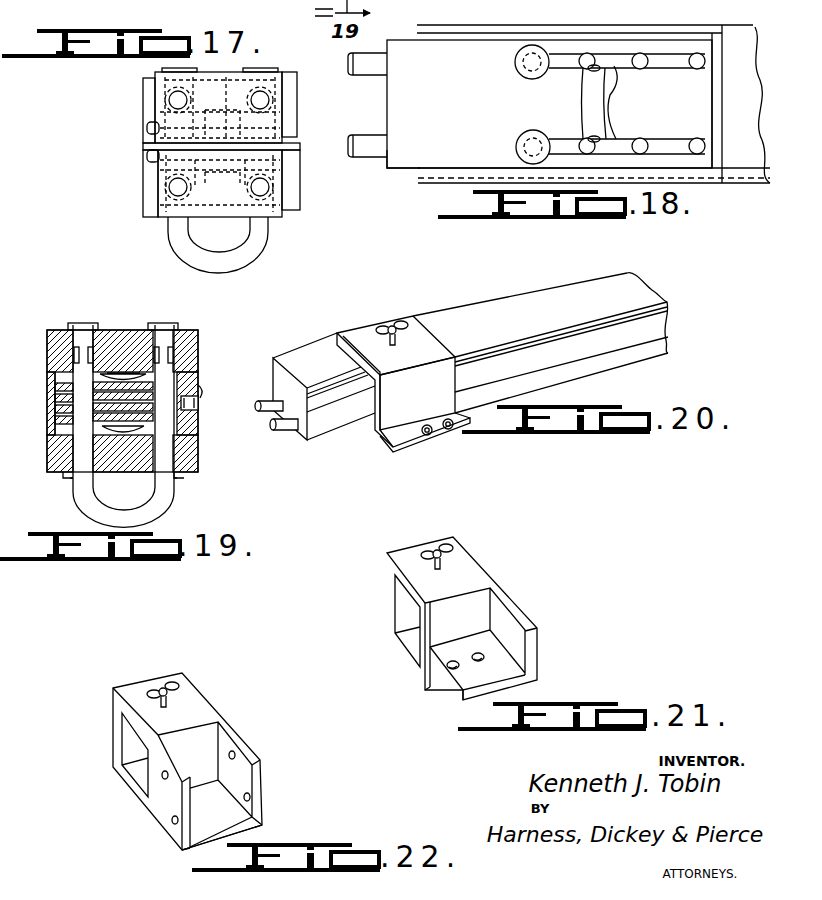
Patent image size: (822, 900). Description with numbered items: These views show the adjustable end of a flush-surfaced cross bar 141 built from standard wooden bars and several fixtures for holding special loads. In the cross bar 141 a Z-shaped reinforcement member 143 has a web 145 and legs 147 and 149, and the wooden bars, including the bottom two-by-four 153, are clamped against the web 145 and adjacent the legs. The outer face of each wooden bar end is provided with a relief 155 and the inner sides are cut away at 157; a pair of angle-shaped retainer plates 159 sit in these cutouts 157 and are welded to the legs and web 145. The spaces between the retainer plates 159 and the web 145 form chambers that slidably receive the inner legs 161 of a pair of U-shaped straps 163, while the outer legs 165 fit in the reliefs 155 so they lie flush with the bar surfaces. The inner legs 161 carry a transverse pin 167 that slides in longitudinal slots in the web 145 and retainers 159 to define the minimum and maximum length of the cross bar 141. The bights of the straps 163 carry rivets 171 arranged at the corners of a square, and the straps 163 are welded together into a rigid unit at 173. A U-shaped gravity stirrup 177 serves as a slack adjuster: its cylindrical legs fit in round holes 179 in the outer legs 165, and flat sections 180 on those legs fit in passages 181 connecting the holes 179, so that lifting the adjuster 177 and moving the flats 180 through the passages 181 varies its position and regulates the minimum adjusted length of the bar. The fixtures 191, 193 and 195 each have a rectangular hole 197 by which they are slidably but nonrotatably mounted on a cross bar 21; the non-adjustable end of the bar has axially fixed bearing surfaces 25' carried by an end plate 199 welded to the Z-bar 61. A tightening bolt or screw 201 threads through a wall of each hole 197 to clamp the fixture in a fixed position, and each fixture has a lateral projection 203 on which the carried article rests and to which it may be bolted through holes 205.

In FIG. 20, the square bar 21 is at (575, 286).
In FIG. 19, the bearing surfaces 25' is at (230, 417).
In FIG. 20, the Z-bar 61 is at (340, 408).
In FIG. 17, the cross bar 141 is at (138, 182).
In FIG. 18, the cross bar 141 is at (726, 24).
In FIG. 19, the Z-shaped reinforcement member 143 is at (52, 352).
In FIG. 19, the web 145 is at (62, 412).
In FIG. 17, the leg 147 is at (143, 102).
In FIG. 19, the leg 147 is at (62, 388).
In FIG. 17, the leg 149 is at (300, 171).
In FIG. 19, the leg 149 is at (200, 437).
In FIG. 19, the bottom 2 x 4 153 is at (85, 332).
In FIG. 18, the relief 155 is at (724, 125).
In FIG. 19, the relief 155 is at (185, 332).
In FIG. 19, the cutout 157 is at (195, 345).
In FIG. 17, the retainer plate 159 is at (150, 128).
In FIG. 19, the retainer plate 159 is at (58, 436).
In FIG. 19, the inner leg 161 is at (200, 403).
In FIG. 18, the U-shaped strap 163 is at (405, 163).
In FIG. 18, the outer leg 165 is at (692, 118).
In FIG. 19, the outer leg 165 is at (96, 345).
In FIG. 17, the transverse pin 167 is at (238, 66).
In FIG. 19, the transverse pin 167 is at (125, 385).
In FIG. 17, the rivet 171 is at (169, 98).
In FIG. 18, the rivet 171 is at (360, 137).
In FIG. 19, the weld 173 is at (68, 478).
In FIG. 17, the U-shaped gravity stirrup 177 is at (248, 245).
In FIG. 18, the U-shaped gravity stirrup 177 is at (530, 80).
In FIG. 19, the U-shaped gravity stirrup 177 is at (112, 400).
In FIG. 18, the round hole 179 is at (586, 84).
In FIG. 17, the flat section 180 is at (194, 235).
In FIG. 19, the flat section 180 is at (162, 340).
In FIG. 18, the passage 181 is at (612, 125).
In FIG. 19, the passage 181 is at (125, 372).
In FIG. 20, the fixture 191 is at (416, 378).
In FIG. 21, the fixture 193 is at (458, 625).
In FIG. 22, the fixture 195 is at (190, 749).
In FIG. 20, the rectangular hole 197 is at (315, 392).
In FIG. 21, the rectangular hole 197 is at (400, 590).
In FIG. 22, the rectangular hole 197 is at (130, 727).
In FIG. 19, the end plate 199 is at (200, 358).
In FIG. 20, the tightening bolt or screw 201 is at (406, 318).
In FIG. 21, the tightening bolt or screw 201 is at (426, 550).
In FIG. 22, the tightening bolt or screw 201 is at (153, 686).
In FIG. 20, the lateral projection 203 is at (395, 440).
In FIG. 21, the lateral projection 203 is at (462, 693).
In FIG. 22, the lateral projection 203 is at (202, 823).
In FIG. 20, the hole 205 is at (452, 430).
In FIG. 21, the hole 205 is at (460, 668).
In FIG. 22, the hole 205 is at (250, 794).